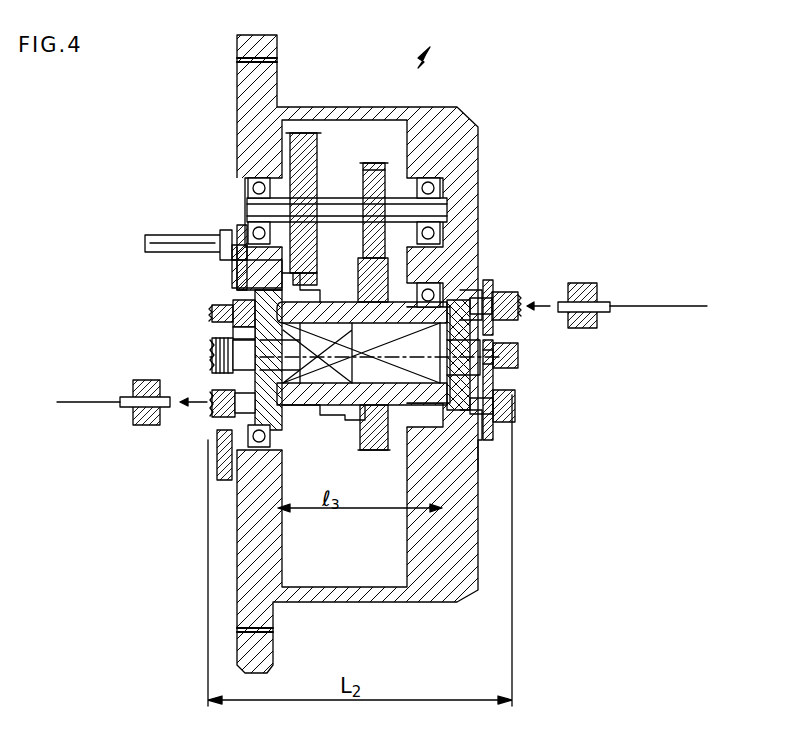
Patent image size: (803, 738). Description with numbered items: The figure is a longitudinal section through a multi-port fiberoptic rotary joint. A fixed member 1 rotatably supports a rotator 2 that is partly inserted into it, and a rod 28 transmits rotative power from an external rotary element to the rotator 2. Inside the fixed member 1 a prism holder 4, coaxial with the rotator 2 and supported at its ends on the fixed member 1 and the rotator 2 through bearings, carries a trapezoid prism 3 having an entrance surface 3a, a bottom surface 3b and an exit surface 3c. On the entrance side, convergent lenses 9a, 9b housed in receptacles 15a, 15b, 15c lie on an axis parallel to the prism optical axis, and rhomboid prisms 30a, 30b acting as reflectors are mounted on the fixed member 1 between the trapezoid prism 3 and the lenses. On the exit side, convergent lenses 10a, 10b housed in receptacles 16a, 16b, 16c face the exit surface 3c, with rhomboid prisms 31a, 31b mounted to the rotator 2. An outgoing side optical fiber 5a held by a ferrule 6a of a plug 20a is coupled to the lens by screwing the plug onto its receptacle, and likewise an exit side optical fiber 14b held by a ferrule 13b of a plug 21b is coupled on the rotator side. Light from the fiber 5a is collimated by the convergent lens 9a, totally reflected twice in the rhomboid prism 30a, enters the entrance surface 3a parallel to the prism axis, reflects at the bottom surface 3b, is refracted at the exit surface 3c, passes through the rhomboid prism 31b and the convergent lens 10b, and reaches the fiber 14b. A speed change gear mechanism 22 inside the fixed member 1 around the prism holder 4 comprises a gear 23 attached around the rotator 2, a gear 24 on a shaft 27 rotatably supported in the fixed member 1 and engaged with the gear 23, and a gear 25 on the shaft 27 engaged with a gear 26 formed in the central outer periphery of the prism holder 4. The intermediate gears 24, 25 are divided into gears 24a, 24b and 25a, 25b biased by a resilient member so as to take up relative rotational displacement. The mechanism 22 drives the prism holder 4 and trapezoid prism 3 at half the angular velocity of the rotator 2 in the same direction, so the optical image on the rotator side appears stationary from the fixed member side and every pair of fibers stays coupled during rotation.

The fixed member 1 is at (478, 127).
The rotator 2 is at (232, 262).
The trapezoid prism 3 is at (330, 405).
The entrance surface 3a is at (460, 300).
The bottom surface 3b is at (345, 405).
The exit surface 3c is at (243, 305).
The prism holder 4 is at (340, 302).
The outgoing side optical fiber 5a is at (687, 306).
The ferrule 6a is at (575, 283).
The convergent lens 9a is at (495, 282).
The convergent lens 9b is at (493, 410).
The convergent lens 10a is at (240, 290).
The convergent lens 10b is at (225, 440).
The ferrule 13b is at (170, 410).
The exit side optical fiber 14b is at (70, 402).
The receptacle 15a is at (515, 293).
The receptacle 15b is at (515, 405).
The receptacle 15c is at (518, 366).
The receptacle 16a is at (225, 250).
The receptacle 16b is at (212, 418).
The receptacle 16c is at (233, 333).
The plug 20a is at (600, 302).
The plug 21b is at (133, 385).
The speed change gear mechanism 22 is at (468, 38).
The gear 23 is at (300, 420).
The gear 24 is at (303, 133).
The divided gear 24a is at (282, 150).
The divided gear 24b is at (320, 210).
The gear 25 is at (380, 240).
The divided gear 25a is at (358, 165).
The divided gear 25b is at (408, 178).
The gear 26 is at (374, 450).
The shaft 27 is at (259, 178).
The rod 28 is at (148, 243).
The rhomboid prism 30a is at (478, 292).
The rhomboid prism 30b is at (475, 440).
The rhomboid prism 31a is at (212, 320).
The rhomboid prism 31b is at (212, 375).